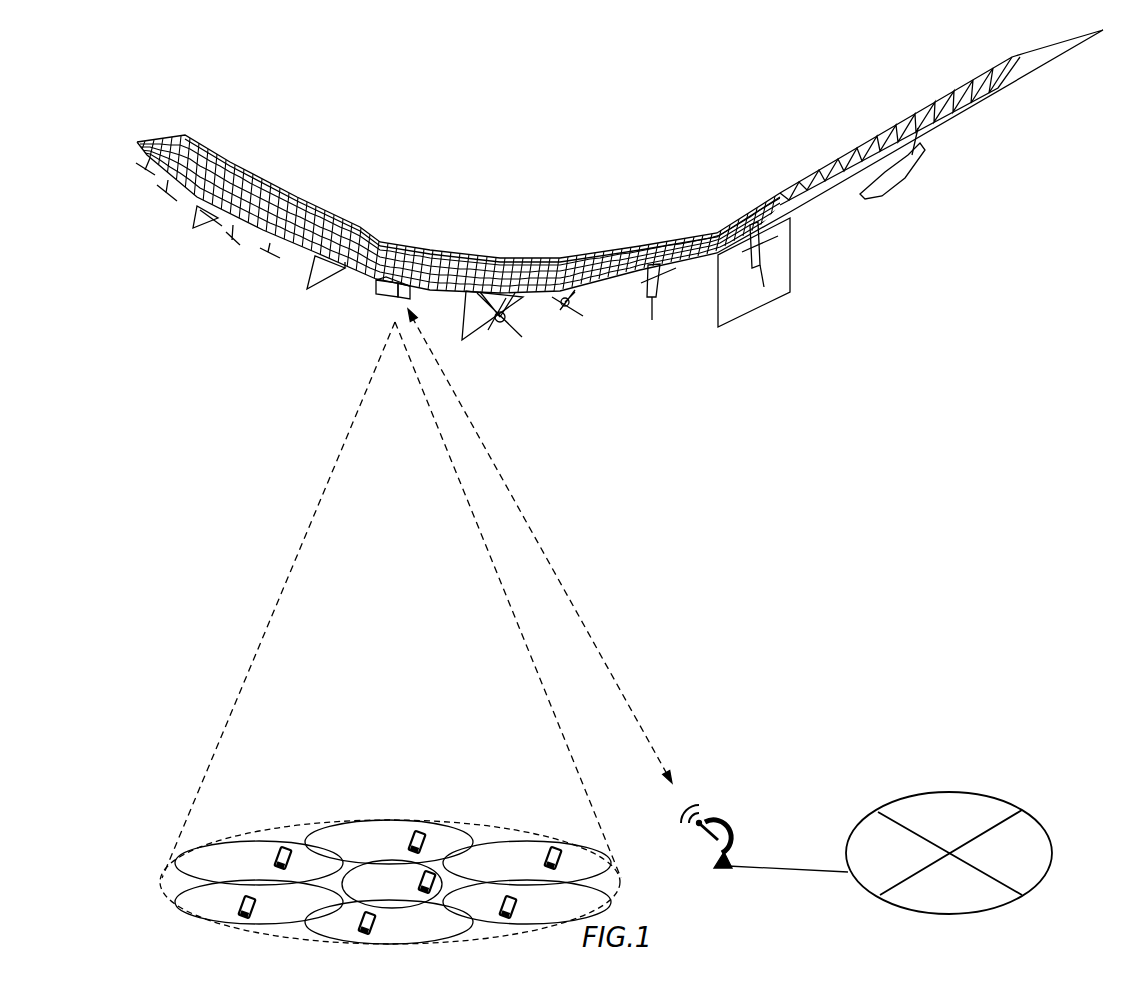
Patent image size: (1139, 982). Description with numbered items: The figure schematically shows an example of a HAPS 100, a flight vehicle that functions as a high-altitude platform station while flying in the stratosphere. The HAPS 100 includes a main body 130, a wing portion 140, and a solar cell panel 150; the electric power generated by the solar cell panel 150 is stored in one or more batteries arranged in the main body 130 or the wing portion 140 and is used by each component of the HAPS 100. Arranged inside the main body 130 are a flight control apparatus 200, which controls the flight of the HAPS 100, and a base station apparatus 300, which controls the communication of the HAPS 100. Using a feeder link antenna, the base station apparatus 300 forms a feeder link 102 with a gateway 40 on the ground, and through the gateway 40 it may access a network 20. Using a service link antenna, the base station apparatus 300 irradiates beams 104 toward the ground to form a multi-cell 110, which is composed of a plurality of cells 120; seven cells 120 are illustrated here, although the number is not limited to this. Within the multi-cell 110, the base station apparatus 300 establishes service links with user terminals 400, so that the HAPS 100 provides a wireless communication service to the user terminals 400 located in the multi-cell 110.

The HAPS 100 is at (147, 80).
The wing portion 140 is at (176, 138).
The solar cell panel 150 is at (298, 203).
The flight control apparatus 200 is at (405, 258).
The main body 130 is at (372, 280).
The base station apparatus 300 is at (387, 288).
The beams 104 is at (300, 544).
The feeder link 102 is at (520, 512).
The multi-cell 110 is at (475, 828).
The cells 120 is at (387, 832).
The user terminals 400 is at (380, 922).
The gateway 40 is at (736, 834).
The network 20 is at (1032, 816).